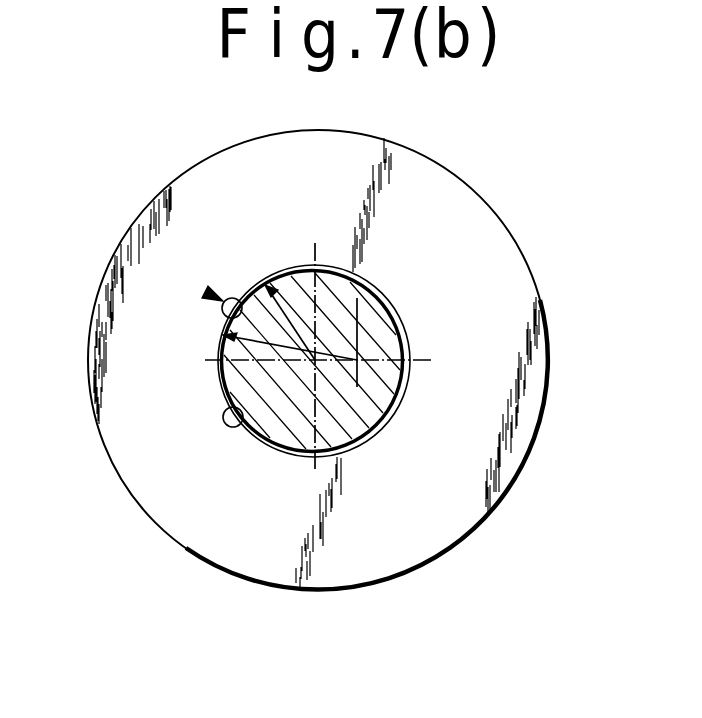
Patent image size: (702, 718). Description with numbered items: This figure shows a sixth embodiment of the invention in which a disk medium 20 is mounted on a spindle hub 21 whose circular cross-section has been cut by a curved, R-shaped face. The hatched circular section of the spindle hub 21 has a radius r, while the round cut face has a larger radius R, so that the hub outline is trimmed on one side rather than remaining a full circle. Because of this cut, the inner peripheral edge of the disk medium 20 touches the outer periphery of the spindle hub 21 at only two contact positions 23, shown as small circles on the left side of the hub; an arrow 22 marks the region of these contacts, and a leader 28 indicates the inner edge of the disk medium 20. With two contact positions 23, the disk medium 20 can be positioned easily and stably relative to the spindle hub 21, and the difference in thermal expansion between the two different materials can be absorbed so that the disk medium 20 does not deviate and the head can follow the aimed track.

The disk medium 20 is at (504, 430).
The spindle hub 21 is at (381, 348).
The reference direction arrow 22 is at (212, 297).
The contact positions 23 is at (232, 298).
The center hole 28 is at (218, 362).